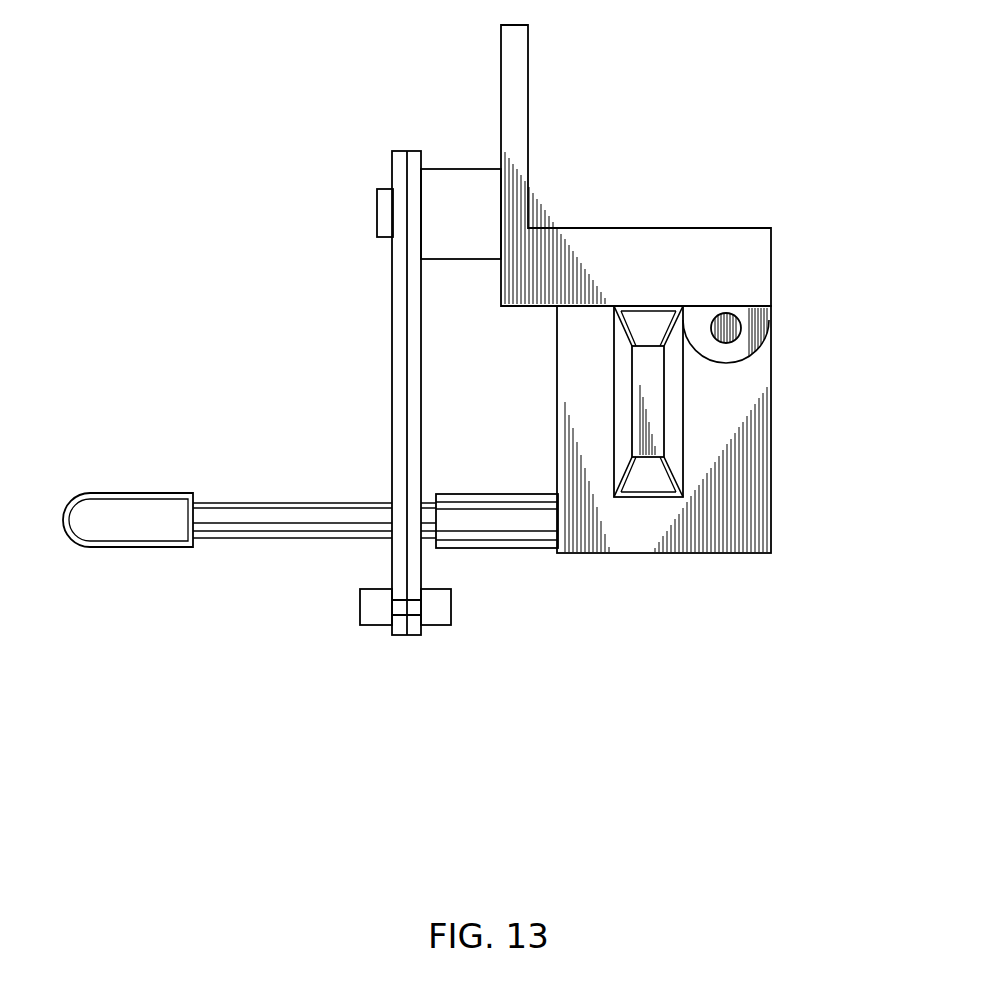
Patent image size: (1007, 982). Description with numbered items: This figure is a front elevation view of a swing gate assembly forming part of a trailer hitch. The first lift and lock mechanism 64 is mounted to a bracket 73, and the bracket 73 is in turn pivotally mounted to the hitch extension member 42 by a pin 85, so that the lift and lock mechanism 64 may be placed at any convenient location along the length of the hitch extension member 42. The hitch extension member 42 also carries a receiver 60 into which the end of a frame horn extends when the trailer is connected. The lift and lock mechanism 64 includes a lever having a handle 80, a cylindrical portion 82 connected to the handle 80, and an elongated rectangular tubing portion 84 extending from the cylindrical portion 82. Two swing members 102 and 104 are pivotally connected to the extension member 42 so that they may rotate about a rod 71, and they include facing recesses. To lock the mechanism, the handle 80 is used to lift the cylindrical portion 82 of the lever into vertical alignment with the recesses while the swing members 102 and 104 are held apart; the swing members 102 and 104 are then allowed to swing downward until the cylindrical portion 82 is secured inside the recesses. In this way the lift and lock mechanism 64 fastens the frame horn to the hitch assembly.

The hitch extension member 42 is at (501, 51).
The rod 71 is at (377, 210).
The swing member 102 is at (392, 282).
The swing member 104 is at (407, 358).
The first lift and lock mechanism 64 is at (372, 683).
The handle 80 is at (155, 492).
The cylindrical portion 82 is at (257, 540).
The elongated rectangular tubing portion 84 is at (500, 549).
The bracket 73 is at (702, 594).
The receiver 60 is at (645, 340).
The pin 85 is at (727, 343).